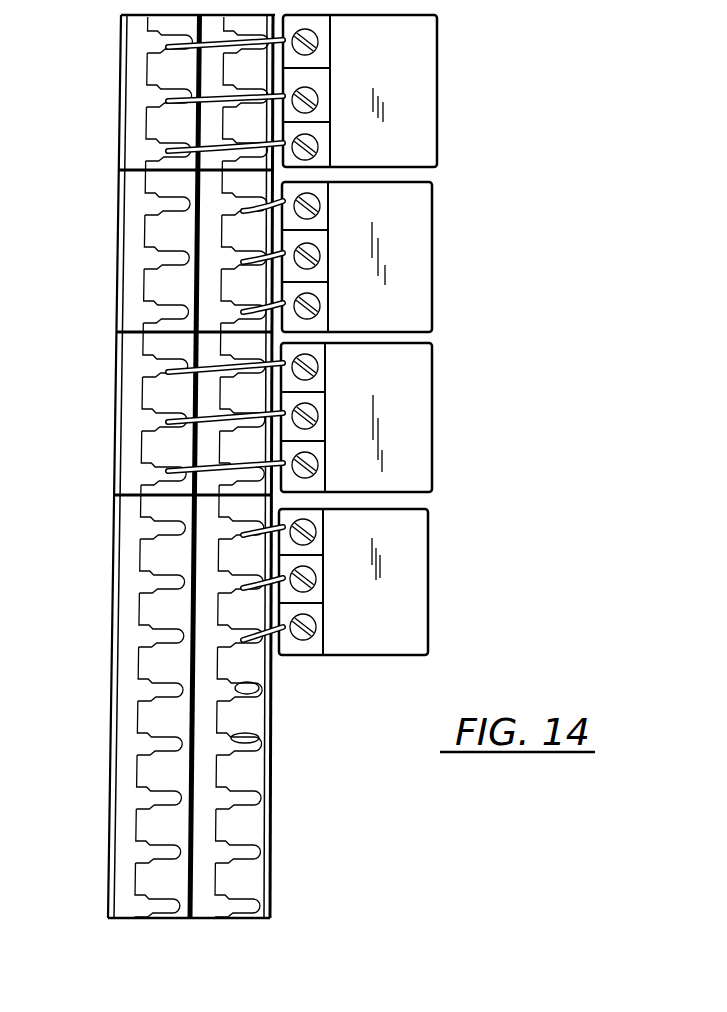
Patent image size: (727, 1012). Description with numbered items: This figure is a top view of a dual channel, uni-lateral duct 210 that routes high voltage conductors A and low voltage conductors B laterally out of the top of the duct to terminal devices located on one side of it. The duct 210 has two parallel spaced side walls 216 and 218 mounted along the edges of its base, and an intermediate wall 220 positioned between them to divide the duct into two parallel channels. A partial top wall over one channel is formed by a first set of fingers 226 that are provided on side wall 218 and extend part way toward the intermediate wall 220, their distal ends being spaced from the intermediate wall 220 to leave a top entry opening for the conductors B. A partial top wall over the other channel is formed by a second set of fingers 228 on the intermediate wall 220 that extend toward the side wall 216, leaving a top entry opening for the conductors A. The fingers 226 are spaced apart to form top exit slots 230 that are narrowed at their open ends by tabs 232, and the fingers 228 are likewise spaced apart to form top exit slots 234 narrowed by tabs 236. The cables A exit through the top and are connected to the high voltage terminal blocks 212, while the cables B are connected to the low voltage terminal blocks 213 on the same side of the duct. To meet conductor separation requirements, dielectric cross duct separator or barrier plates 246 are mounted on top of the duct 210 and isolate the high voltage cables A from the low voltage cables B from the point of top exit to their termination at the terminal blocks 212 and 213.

The dual channel, uni-lateral duct 210 is at (100, 434).
The high voltage terminal blocks 212 is at (437, 74).
The low voltage terminal blocks 213 is at (432, 256).
The side wall 216 is at (118, 129).
The side wall 218 is at (267, 768).
The intermediate wall 220 is at (200, 912).
The first set of fingers 226 is at (262, 817).
The second set of fingers 228 is at (170, 45).
The top exit slots 230 is at (263, 703).
The tabs 232 is at (263, 738).
The top exit slots 234 is at (155, 258).
The tabs 236 is at (143, 201).
The cross duct separator or barrier plates 246 is at (143, 170).
The high voltage conductors A is at (137, 72).
The low voltage conductors B is at (306, 667).